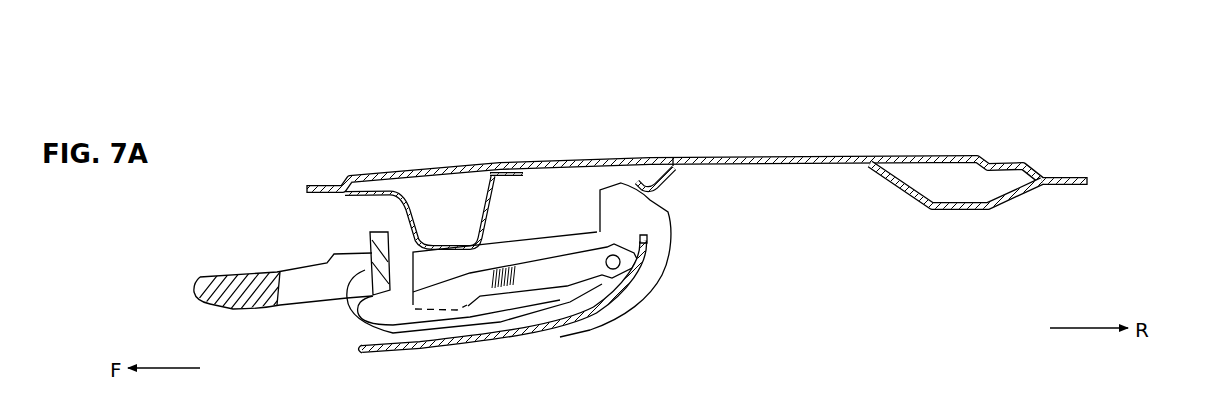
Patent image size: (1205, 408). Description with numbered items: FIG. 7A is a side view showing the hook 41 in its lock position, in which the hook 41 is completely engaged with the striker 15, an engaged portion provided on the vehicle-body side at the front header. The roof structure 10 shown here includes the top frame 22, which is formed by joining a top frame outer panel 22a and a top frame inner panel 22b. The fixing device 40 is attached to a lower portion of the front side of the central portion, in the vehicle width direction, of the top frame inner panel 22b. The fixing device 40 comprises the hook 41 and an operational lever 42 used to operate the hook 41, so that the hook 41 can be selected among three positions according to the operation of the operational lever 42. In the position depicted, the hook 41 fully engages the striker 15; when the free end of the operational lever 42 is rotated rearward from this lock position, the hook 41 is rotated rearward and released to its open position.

The door trim / panel 10 is at (779, 136).
The top frame 22 is at (628, 152).
The top frame outer panel 22a is at (858, 155).
The top frame inner panel 22b is at (398, 210).
The striker 15 is at (248, 272).
The fixing device 40 is at (703, 240).
The hook 41 is at (405, 318).
The operational lever 42 is at (512, 336).